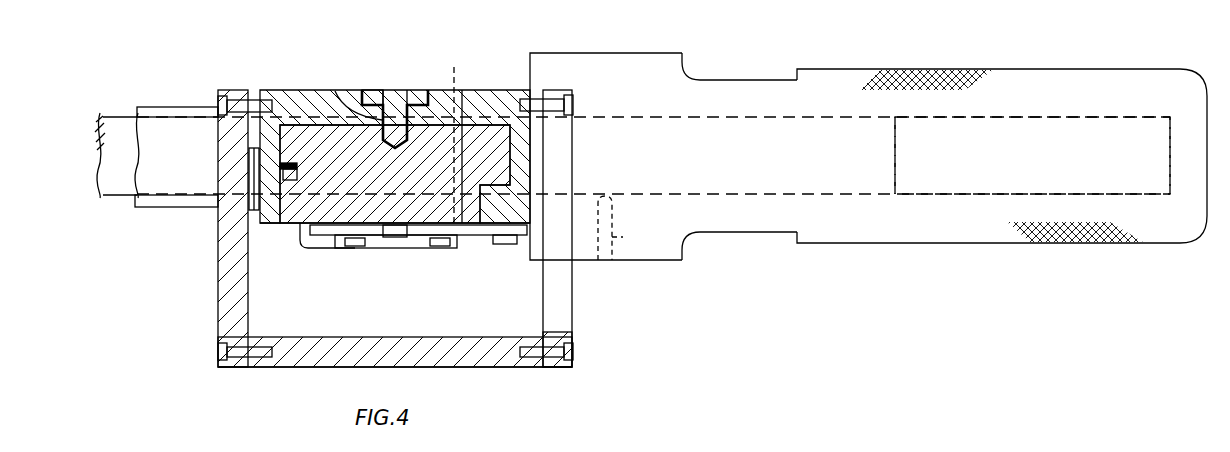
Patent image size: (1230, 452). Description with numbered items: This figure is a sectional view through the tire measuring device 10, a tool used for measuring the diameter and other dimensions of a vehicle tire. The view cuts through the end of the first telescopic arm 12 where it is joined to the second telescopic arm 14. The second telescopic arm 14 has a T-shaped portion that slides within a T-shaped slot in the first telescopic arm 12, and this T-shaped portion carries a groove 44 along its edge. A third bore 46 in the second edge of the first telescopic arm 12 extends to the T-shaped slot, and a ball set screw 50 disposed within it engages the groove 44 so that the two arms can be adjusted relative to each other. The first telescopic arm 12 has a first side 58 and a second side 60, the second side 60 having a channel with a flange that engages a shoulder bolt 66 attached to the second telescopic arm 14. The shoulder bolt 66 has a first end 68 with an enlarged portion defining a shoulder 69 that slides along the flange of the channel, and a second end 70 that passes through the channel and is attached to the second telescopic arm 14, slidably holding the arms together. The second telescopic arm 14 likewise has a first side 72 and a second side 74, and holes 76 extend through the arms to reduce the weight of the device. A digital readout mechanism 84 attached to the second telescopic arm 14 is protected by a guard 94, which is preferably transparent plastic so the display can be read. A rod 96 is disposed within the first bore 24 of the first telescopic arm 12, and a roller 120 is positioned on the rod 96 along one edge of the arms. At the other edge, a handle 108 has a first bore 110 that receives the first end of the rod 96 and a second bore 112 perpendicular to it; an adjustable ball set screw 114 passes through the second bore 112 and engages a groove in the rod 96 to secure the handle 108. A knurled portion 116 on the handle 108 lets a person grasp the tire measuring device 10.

The tire measuring device 10 is at (695, 346).
The first telescopic arm 12 is at (290, 90).
The second telescopic arm 14 is at (367, 250).
The first bore 24 is at (517, 90).
The groove 44 is at (291, 181).
The third bore 46 is at (263, 215).
The ball set screw 50 is at (250, 115).
The first side 58 is at (505, 238).
The second side 60 is at (293, 90).
The shoulder bolt 66 is at (360, 90).
The first end 68 is at (368, 90).
The shoulder 69 is at (416, 90).
The second end 70 is at (337, 91).
The first side 72 is at (430, 227).
The second side 74 is at (477, 125).
The holes 76 is at (456, 132).
The digital readout mechanism 84 is at (378, 238).
The guard 94 is at (297, 368).
The rod 96 is at (113, 198).
The handle 108 is at (1140, 70).
The first bore 110 is at (940, 183).
The second bore 112 is at (637, 242).
The adjustable ball set screw 114 is at (605, 262).
The knurled portion 116 is at (930, 70).
The roller 120 is at (172, 107).